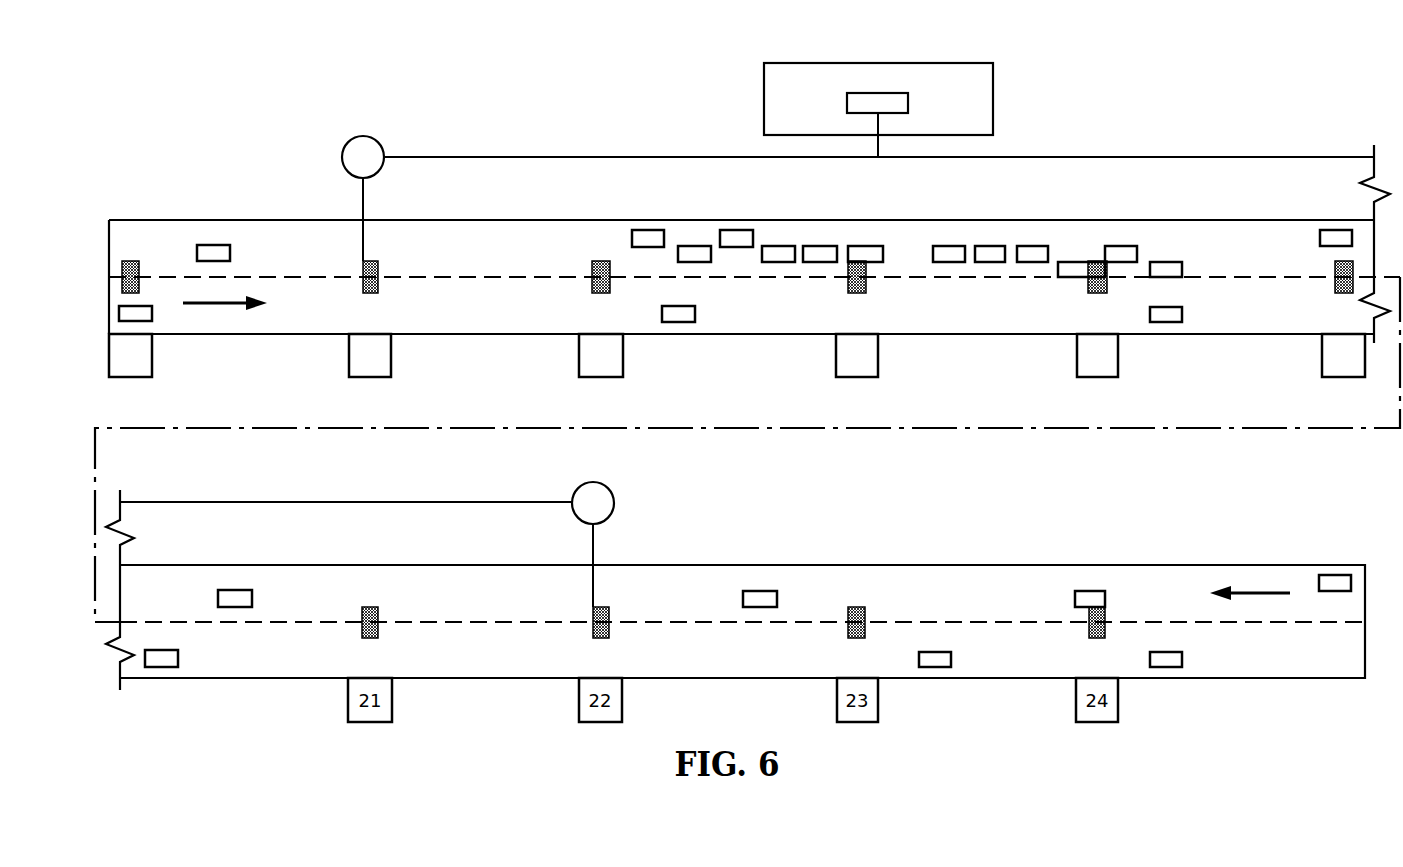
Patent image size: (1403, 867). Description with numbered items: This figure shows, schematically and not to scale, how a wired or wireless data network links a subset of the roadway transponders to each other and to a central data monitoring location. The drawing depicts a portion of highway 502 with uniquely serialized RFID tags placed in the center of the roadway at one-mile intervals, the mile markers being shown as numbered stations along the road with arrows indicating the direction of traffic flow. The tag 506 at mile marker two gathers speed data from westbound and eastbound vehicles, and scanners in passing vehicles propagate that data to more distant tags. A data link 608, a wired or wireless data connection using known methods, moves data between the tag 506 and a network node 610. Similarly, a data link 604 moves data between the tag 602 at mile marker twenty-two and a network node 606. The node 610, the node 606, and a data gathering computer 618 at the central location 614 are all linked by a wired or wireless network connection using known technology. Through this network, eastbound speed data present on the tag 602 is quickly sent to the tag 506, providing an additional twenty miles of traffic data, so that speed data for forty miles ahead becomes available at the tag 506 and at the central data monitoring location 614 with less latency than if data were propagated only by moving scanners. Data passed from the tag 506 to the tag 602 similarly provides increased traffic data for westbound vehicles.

The highway 502 is at (226, 213).
The RFID tag 506 is at (372, 293).
The tag 602 is at (600, 640).
The data link 604 is at (592, 585).
The network node 606 is at (612, 515).
The data link 608 is at (363, 253).
The network node 610 is at (346, 145).
The central location 614 is at (993, 98).
The data gathering computer 618 is at (908, 103).